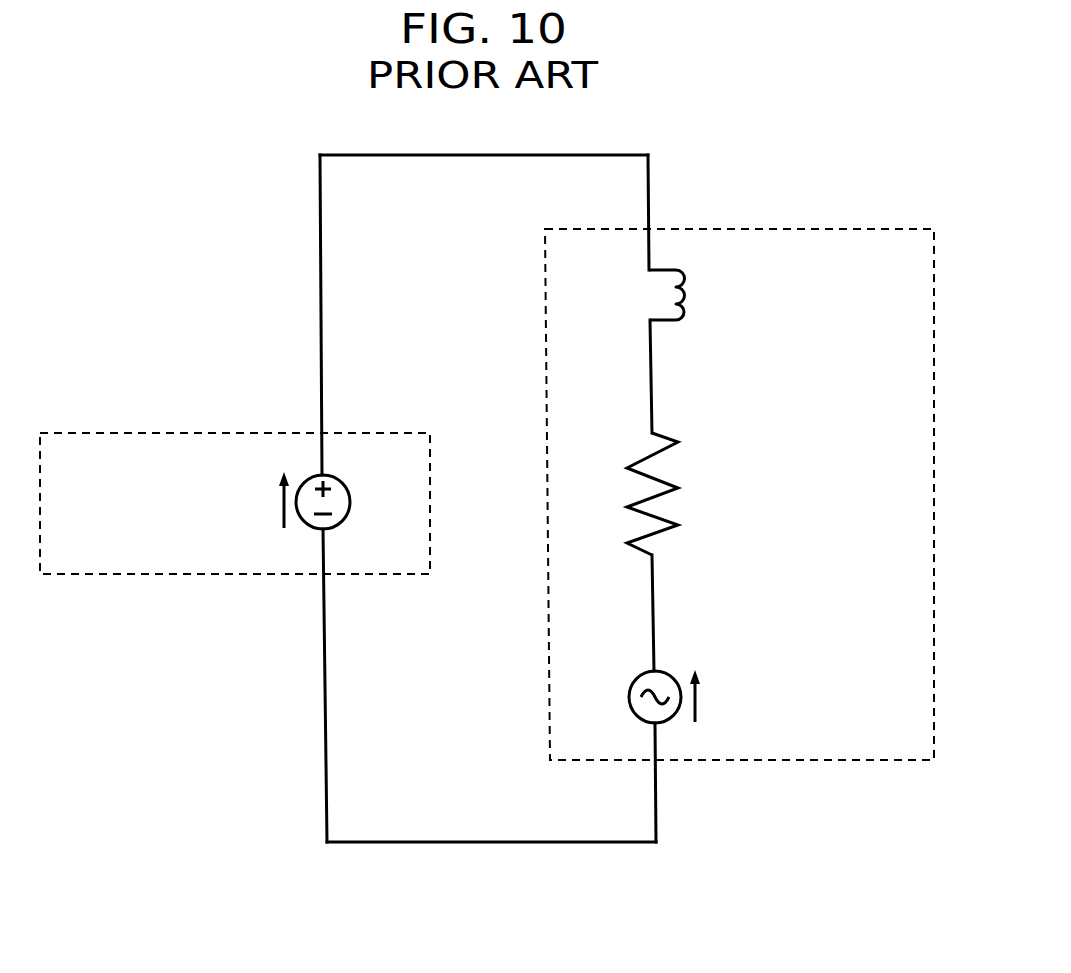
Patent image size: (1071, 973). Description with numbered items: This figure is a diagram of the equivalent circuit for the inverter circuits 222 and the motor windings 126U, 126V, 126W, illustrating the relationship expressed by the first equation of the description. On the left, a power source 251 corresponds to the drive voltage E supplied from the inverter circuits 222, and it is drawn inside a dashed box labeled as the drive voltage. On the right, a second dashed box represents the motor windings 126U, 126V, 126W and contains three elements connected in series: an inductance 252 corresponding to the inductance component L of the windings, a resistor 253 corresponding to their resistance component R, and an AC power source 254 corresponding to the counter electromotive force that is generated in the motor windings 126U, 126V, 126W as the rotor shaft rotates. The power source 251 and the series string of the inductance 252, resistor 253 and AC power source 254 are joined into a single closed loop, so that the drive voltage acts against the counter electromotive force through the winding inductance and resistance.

The inverter circuits 222 is at (182, 574).
The power source 251 is at (350, 500).
The inductance 252 is at (683, 320).
The resistor 253 is at (655, 538).
The AC power source 254 is at (670, 672).
The motor winding 126U is at (739, 530).
The motor winding 126V is at (739, 530).
The motor winding 126W is at (762, 760).